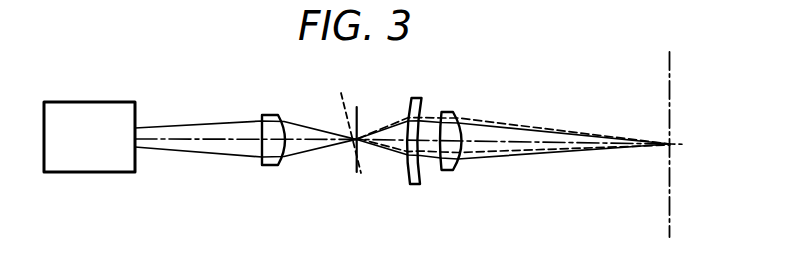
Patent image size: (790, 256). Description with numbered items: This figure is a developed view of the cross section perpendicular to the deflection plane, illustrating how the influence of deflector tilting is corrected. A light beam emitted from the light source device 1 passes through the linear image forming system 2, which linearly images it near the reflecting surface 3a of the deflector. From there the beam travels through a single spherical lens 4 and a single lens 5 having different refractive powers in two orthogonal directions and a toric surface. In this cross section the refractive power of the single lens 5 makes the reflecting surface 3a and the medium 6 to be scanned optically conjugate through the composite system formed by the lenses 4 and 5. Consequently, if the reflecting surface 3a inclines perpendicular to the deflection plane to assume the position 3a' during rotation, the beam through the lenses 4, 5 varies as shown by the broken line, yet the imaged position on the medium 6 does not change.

The light source device 1 is at (96, 102).
The linear image forming system 2 is at (269, 115).
The deflecting and reflecting surface 3a is at (374, 120).
The inclined position of reflecting surface 3a' is at (343, 120).
The single spherical lens 4 is at (417, 98).
The single lens having a toric surface 5 is at (446, 112).
The medium to be scanned 6 is at (669, 72).